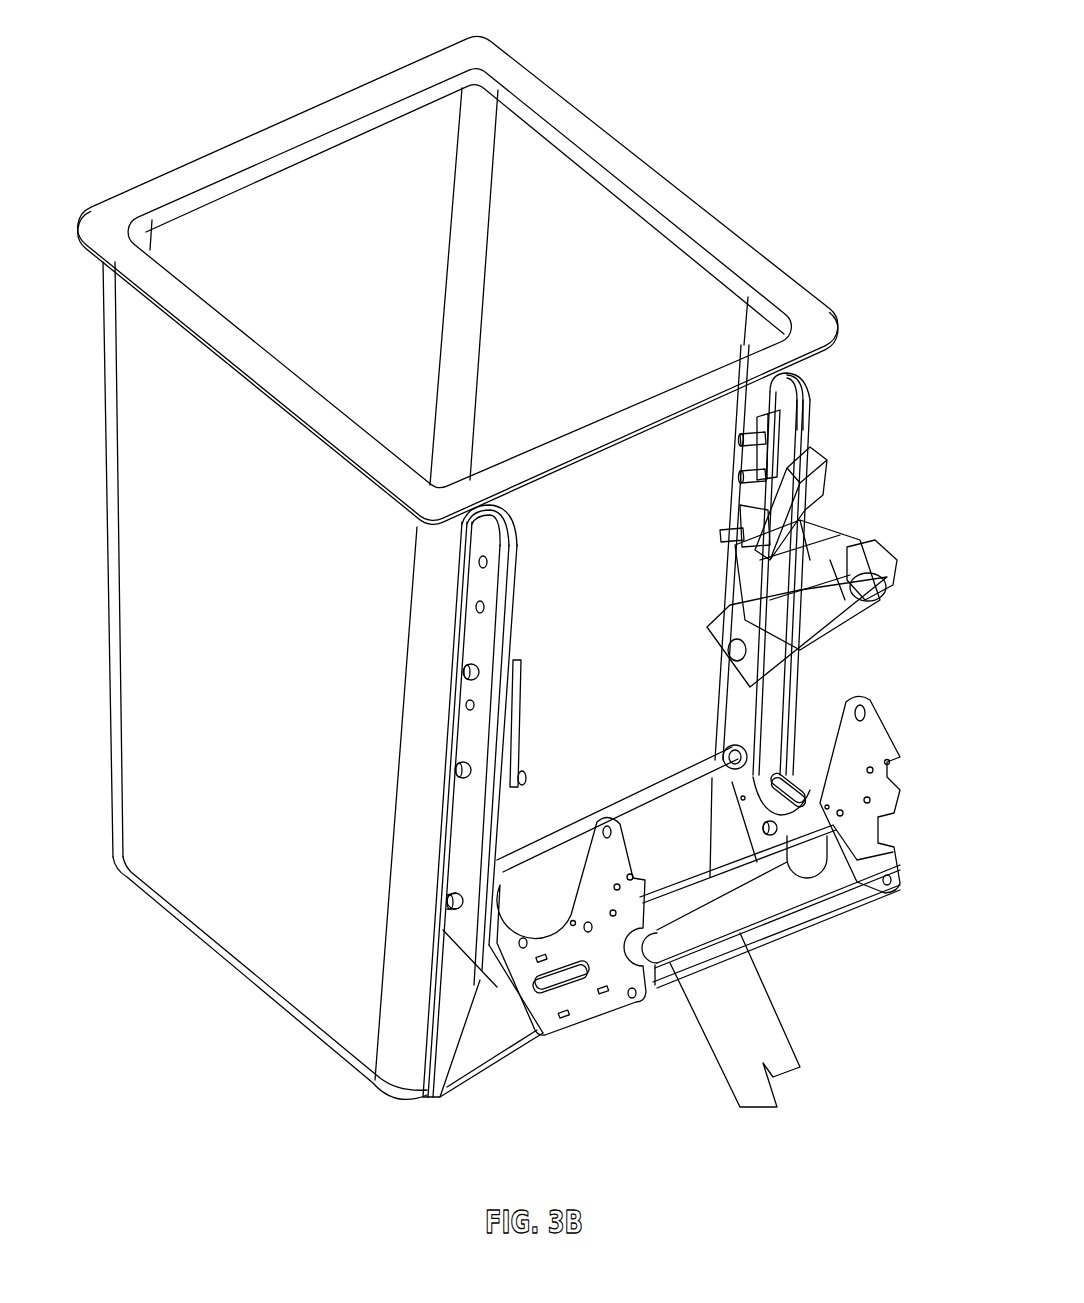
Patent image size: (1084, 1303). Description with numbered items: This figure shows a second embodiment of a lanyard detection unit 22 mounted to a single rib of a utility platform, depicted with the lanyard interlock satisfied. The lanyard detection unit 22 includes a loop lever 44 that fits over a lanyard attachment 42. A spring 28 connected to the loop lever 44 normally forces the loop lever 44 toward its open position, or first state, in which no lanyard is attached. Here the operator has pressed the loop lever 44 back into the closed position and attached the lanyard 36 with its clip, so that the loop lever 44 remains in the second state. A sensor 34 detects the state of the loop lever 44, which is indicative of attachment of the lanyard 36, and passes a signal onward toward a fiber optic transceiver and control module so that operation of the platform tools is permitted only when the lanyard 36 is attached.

The lanyard detection unit 22 is at (857, 451).
The spring 28 is at (720, 607).
The sensor 34 is at (730, 640).
The lanyard 36 is at (880, 553).
The lanyard attachment 42 is at (803, 427).
The loop lever 44 is at (820, 460).